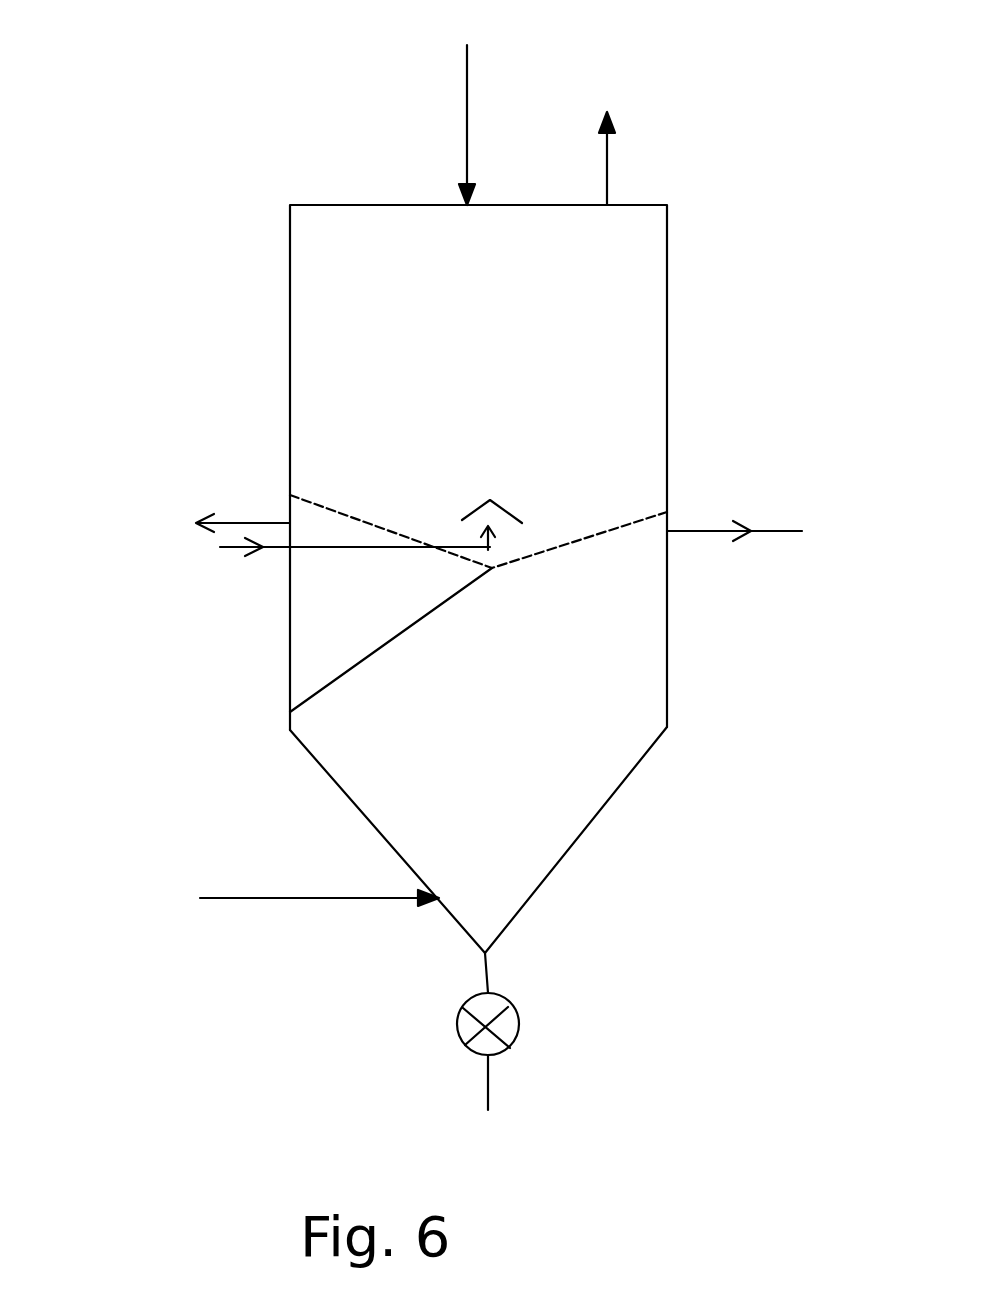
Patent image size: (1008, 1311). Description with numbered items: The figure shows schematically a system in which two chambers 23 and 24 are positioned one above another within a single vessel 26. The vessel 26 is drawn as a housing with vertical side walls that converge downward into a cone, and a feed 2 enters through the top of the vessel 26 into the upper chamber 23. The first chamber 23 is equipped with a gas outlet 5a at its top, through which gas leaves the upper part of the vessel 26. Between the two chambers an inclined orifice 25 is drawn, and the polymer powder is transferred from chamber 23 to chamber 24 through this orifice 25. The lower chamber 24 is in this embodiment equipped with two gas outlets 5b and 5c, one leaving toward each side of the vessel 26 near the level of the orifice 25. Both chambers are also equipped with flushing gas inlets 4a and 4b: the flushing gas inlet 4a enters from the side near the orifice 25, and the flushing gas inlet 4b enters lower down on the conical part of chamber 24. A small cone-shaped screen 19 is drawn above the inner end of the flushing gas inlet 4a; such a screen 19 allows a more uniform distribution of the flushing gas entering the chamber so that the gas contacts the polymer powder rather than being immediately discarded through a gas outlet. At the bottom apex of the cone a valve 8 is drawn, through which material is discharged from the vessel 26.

The feed inlet 2 is at (531, 102).
The gas outlet 5a is at (683, 132).
The gas outlet 5b is at (769, 593).
The gas outlet 5c is at (211, 468).
The flushing gas inlet 4a is at (321, 617).
The flushing gas inlet 4b is at (319, 968).
The valve 8 is at (542, 1050).
The screen 19 is at (660, 441).
The chamber 23 is at (564, 276).
The chamber 24 is at (528, 834).
The orifice 25 is at (359, 690).
The vessel 26 is at (373, 448).